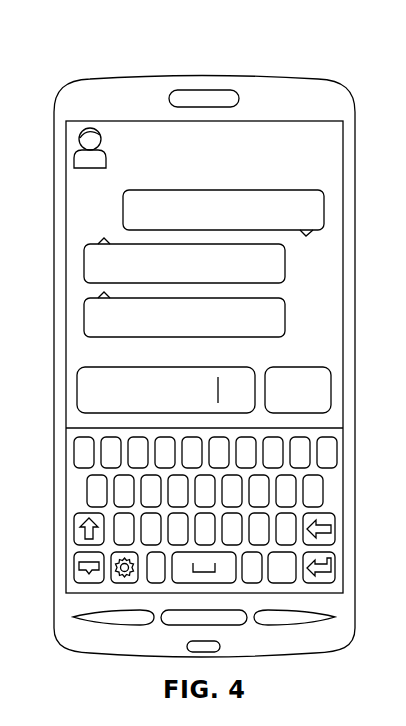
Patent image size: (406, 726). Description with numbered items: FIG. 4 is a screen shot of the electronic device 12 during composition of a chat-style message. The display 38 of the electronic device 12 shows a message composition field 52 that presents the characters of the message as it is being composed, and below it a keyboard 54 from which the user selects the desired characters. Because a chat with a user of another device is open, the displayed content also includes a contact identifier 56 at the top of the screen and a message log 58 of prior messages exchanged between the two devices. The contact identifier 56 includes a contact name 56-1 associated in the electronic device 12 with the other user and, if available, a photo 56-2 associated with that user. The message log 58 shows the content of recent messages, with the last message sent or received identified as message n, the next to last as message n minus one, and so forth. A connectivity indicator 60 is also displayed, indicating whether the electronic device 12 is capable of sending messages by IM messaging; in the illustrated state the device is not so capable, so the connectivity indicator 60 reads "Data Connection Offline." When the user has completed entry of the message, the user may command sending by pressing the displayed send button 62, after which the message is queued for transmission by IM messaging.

The electronic device 12 is at (265, 77).
The display 38 is at (328, 262).
The message composition field 52 is at (82, 373).
The keyboard 54 is at (72, 431).
The contact identifier 56 is at (209, 103).
The contact name 56-1 is at (88, 128).
The photo 56-2 is at (145, 137).
The message log 58 is at (93, 198).
The connectivity indicator 60 is at (302, 154).
The send button 62 is at (322, 377).